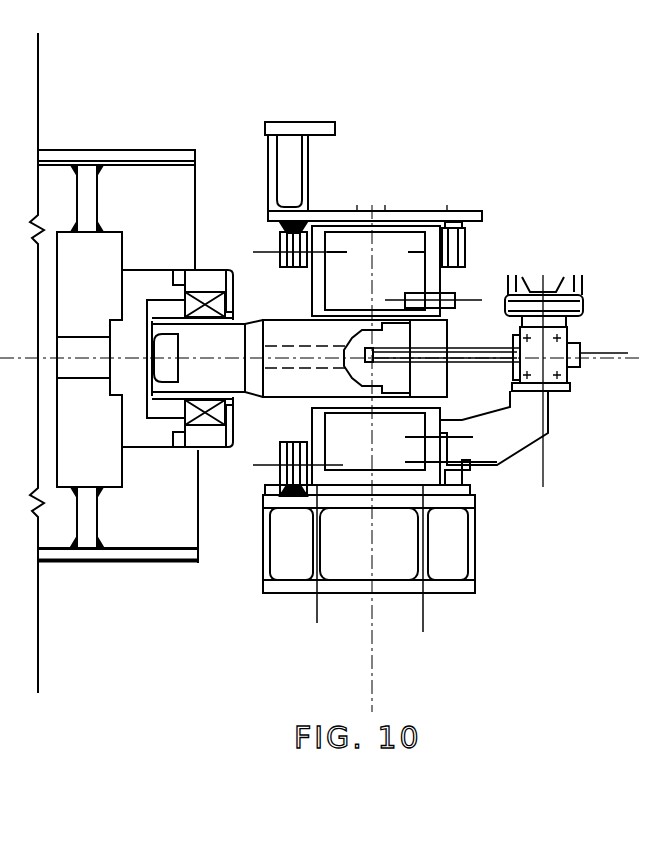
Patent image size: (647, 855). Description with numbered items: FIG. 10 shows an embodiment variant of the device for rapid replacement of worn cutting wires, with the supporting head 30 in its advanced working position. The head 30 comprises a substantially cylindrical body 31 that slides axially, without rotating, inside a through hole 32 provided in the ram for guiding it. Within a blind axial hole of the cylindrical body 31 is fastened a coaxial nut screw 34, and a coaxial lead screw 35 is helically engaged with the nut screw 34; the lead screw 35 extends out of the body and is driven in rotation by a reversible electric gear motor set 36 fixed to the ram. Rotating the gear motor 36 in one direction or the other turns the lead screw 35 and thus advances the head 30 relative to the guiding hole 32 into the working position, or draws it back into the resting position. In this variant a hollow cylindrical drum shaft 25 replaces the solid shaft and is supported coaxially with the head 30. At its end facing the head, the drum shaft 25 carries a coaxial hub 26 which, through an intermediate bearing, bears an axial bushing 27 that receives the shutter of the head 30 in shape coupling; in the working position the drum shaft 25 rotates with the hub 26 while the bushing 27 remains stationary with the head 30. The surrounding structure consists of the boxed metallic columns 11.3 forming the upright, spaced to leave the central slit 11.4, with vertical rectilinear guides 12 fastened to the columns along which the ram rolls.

The drum shaft 25 is at (119, 150).
The central slit 11.4 is at (297, 287).
The vertical rectilinear guides 12 is at (281, 226).
The hub 26 is at (230, 270).
The axial bushing 27 is at (203, 395).
The cylindrical body 31 is at (291, 320).
The supporting head 30 is at (275, 408).
The through hole 32 is at (438, 338).
The nut screw 34 is at (356, 318).
The lead screw 35 is at (484, 362).
The reversible electric gear motor set 36 is at (535, 362).
The metallic columns 11.3 is at (455, 594).